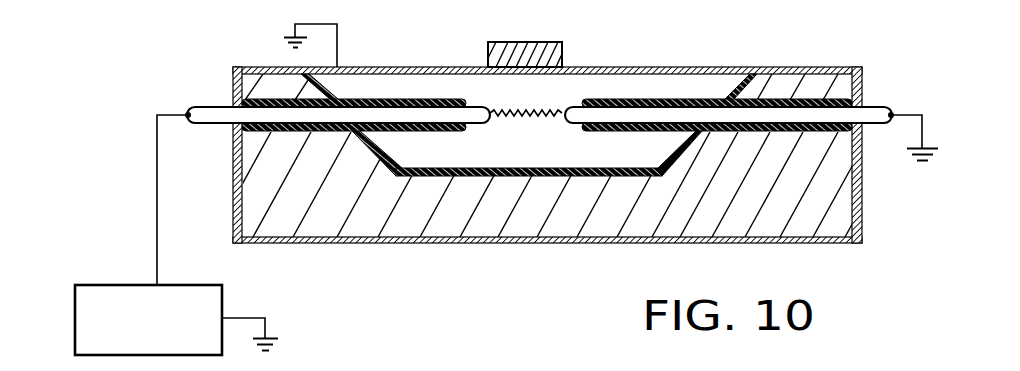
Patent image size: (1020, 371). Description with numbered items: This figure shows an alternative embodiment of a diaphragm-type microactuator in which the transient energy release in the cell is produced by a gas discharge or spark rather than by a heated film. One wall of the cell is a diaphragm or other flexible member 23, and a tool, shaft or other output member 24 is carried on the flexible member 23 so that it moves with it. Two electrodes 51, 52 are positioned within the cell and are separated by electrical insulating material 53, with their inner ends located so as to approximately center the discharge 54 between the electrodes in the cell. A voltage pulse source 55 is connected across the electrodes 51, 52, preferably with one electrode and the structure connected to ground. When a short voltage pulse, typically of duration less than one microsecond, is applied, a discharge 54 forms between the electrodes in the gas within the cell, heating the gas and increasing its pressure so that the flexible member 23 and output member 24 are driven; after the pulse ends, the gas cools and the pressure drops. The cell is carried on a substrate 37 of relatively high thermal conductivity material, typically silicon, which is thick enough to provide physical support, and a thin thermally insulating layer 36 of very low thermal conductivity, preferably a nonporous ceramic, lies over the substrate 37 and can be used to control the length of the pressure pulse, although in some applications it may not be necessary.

The flexible member 23 is at (388, 66).
The output member 24 is at (562, 50).
The layer of low thermal conductivity material 36 is at (585, 178).
The substrate 37 is at (400, 222).
The electrode 51 is at (876, 112).
The electrode 52 is at (197, 103).
The electrical insulating material 53 is at (240, 187).
The discharge 54 is at (511, 112).
The voltage pulse source 55 is at (222, 300).